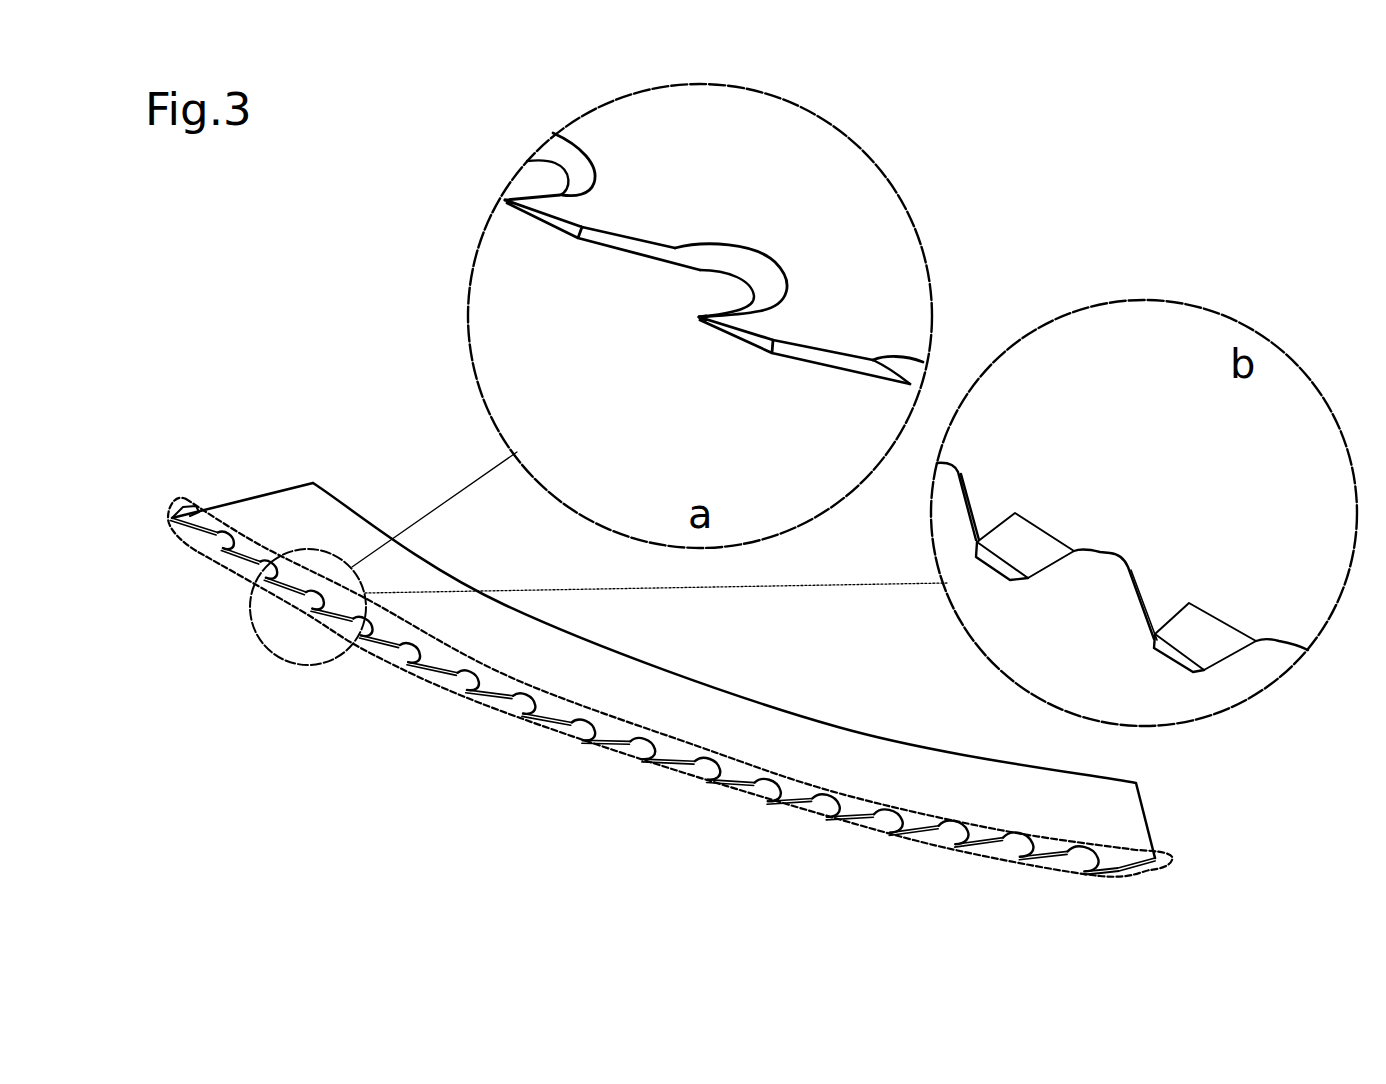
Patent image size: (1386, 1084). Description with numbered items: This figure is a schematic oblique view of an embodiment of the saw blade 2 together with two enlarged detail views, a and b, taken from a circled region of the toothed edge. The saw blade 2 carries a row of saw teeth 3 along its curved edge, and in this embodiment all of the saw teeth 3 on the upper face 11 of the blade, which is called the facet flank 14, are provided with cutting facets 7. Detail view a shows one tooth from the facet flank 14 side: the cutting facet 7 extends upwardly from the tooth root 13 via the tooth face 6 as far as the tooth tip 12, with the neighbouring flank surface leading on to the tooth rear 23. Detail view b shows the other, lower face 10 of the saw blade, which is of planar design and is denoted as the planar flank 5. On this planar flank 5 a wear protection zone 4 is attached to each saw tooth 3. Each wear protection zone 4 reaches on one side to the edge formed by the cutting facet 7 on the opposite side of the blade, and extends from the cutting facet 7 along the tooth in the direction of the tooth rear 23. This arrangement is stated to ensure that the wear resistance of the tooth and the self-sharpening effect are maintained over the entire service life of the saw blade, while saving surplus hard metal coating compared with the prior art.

The saw blade 2 is at (1002, 860).
The saw tooth 3 is at (332, 610).
The wear protection zone 4 is at (1028, 551).
The planar flank 5 is at (1154, 594).
The tooth face 6 is at (748, 313).
The cutting facet 7 is at (526, 698).
The lower face 10 is at (1031, 490).
The upper face 11 is at (740, 193).
The tooth tip 12 is at (724, 321).
The tooth root 13 is at (716, 289).
The facet flank 14 is at (222, 518).
The tooth rear 23 is at (610, 240).